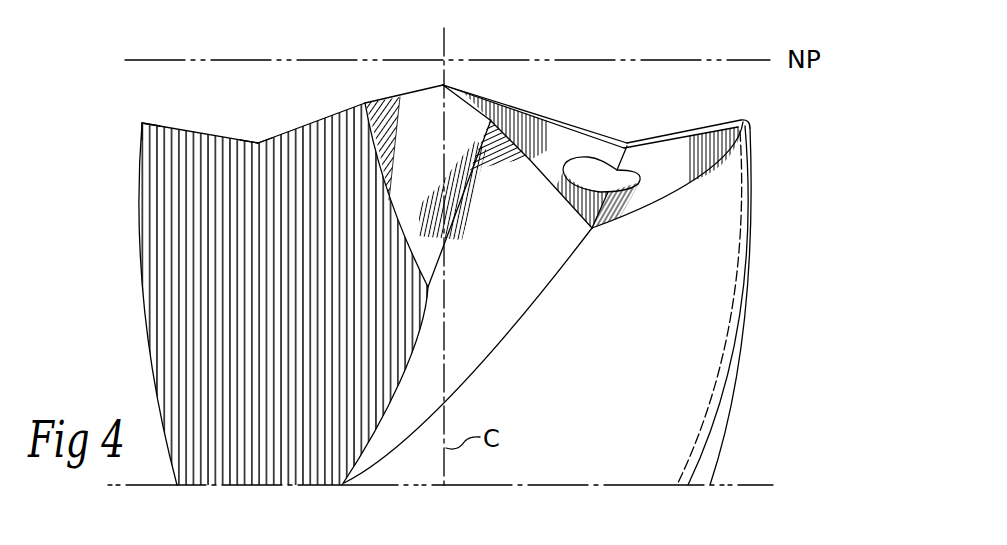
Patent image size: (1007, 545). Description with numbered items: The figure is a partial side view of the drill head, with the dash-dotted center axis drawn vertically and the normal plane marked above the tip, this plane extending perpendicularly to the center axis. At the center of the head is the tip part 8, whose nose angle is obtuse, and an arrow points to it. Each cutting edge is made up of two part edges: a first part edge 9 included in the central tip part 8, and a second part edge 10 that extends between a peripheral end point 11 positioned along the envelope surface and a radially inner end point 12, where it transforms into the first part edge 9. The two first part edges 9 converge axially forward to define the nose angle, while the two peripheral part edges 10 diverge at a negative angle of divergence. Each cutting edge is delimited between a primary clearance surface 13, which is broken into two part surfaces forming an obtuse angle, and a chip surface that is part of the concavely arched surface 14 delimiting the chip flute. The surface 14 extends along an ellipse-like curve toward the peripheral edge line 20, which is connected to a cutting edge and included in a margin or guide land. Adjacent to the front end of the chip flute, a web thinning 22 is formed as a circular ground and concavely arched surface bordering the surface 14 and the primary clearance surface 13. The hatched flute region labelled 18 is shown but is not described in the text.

The tip part 8 is at (384, 88).
The first part edge 9 is at (303, 127).
The second part edge 10 is at (203, 133).
The peripheral end point 11 is at (147, 122).
The radially inner end point 12 is at (258, 143).
The primary clearance surface 13 is at (467, 186).
The surface delimiting the chip flute 14 is at (435, 347).
The flute 18 is at (273, 326).
The edge line 20 is at (139, 284).
The web thinning 22 is at (432, 162).